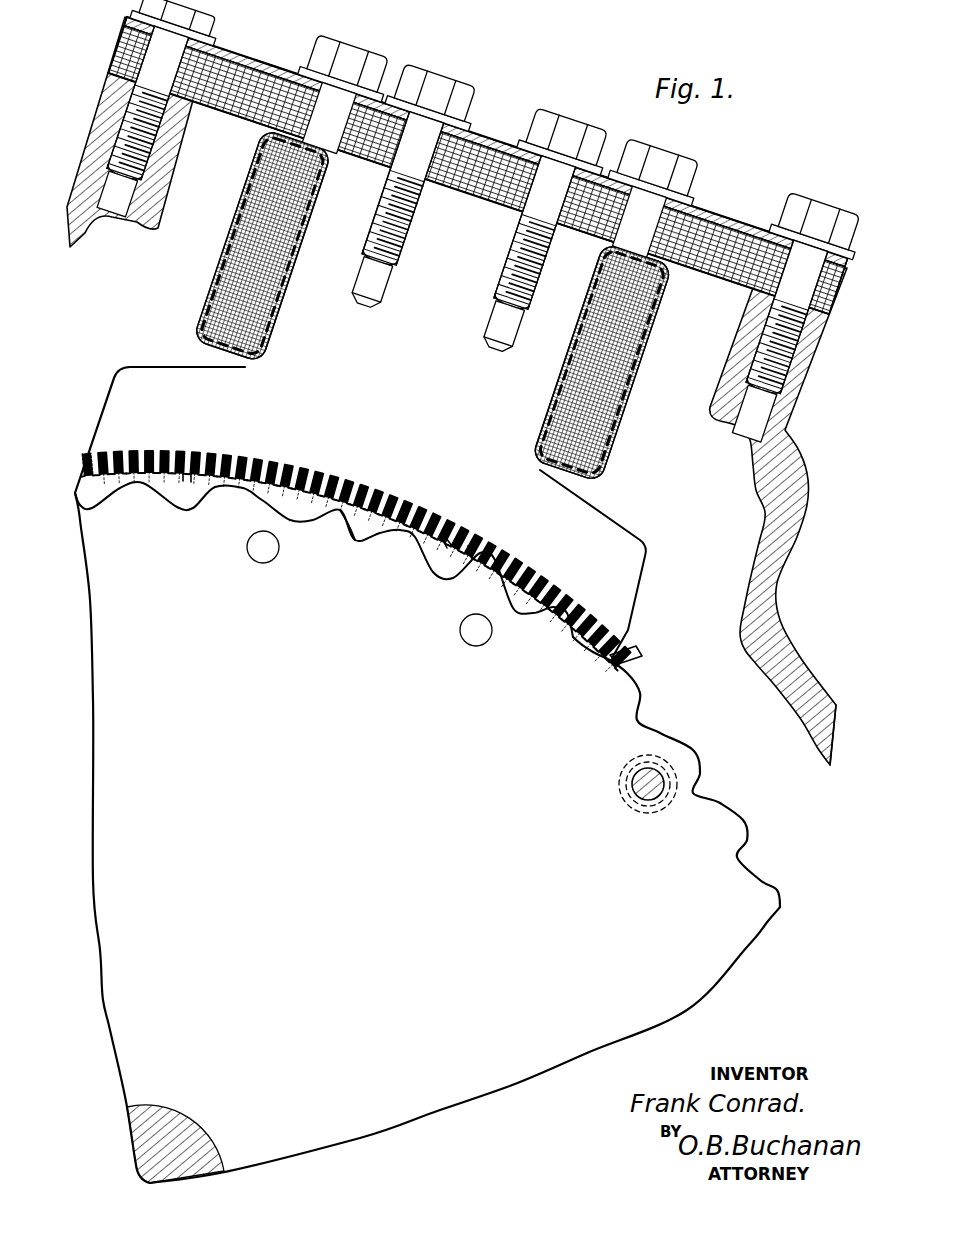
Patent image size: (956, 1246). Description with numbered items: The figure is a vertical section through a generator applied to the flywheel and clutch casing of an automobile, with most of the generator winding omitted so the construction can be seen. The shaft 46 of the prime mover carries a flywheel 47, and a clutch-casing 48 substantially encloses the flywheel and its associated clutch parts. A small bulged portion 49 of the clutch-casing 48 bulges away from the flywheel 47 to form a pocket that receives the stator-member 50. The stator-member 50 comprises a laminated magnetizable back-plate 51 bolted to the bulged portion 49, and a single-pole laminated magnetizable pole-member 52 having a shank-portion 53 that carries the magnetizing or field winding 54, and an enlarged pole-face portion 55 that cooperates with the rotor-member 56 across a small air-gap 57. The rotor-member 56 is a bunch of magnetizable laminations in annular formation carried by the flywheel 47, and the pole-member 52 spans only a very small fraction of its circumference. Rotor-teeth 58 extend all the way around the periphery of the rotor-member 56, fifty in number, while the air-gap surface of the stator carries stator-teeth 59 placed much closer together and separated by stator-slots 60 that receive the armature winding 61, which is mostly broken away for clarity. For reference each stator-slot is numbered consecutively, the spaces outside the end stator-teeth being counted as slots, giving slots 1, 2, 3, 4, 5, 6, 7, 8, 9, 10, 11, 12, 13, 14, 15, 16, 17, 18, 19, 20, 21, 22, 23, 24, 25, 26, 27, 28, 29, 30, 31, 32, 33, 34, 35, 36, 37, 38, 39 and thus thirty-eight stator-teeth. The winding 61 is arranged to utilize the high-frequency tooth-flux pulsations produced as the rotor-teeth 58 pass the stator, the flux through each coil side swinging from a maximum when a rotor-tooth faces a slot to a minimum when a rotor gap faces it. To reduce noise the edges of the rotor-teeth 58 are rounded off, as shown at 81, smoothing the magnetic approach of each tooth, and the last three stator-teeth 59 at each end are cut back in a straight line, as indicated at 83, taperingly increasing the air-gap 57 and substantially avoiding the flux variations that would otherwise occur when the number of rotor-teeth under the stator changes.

The shaft 46 is at (187, 1127).
The flywheel 47 is at (438, 999).
The clutch-casing 48 is at (820, 745).
The bulged portion 49 is at (800, 494).
The stator-member 50 is at (472, 272).
The back-plate 51 is at (722, 233).
The pole-member 52 is at (564, 362).
The shank-portion 53 is at (568, 315).
The field winding 54 is at (663, 303).
The pole-face portion 55 is at (230, 414).
The rotor-member 56 is at (368, 550).
The air-gap 57 is at (352, 523).
The rotor-teeth 58 is at (622, 686).
The stator-teeth 59 is at (183, 480).
The stator-slots 60 is at (191, 482).
The armature winding 61 is at (448, 545).
The rounded-off rotor-tooth edges 81 is at (640, 700).
The cut-back stator-teeth 83 is at (620, 650).
The stator-slot 1 is at (86, 455).
The stator-slot 2 is at (102, 459).
The stator-slot 3 is at (118, 458).
The stator-slot 4 is at (133, 457).
The stator-slot 5 is at (148, 457).
The stator-slot 6 is at (164, 457).
The stator-slot 7 is at (180, 458).
The stator-slot 8 is at (195, 459).
The stator-slot 9 is at (211, 460).
The stator-slot 10 is at (226, 462).
The stator-slot 11 is at (242, 464).
The stator-slot 12 is at (257, 466).
The stator-slot 13 is at (274, 459).
The stator-slot 14 is at (288, 469).
The stator-slot 15 is at (305, 465).
The stator-slot 16 is at (318, 476).
The stator-slot 17 is at (336, 473).
The stator-slot 18 is at (348, 485).
The stator-slot 19 is at (365, 482).
The stator-slot 20 is at (377, 495).
The stator-slot 21 is at (395, 492).
The stator-slot 22 is at (406, 506).
The stator-slot 23 is at (424, 505).
The stator-slot 24 is at (435, 518).
The stator-slot 25 is at (452, 519).
The stator-slot 26 is at (463, 532).
The stator-slot 27 is at (481, 533).
The stator-slot 28 is at (490, 548).
The stator-slot 29 is at (508, 549).
The stator-slot 30 is at (516, 564).
The stator-slot 31 is at (534, 566).
The stator-slot 32 is at (542, 581).
The stator-slot 33 is at (559, 584).
The stator-slot 34 is at (567, 601).
The stator-slot 35 is at (584, 604).
The stator-slot 36 is at (590, 620).
The stator-slot 37 is at (608, 625).
The stator-slot 38 is at (614, 642).
The stator-slot 39 is at (630, 647).